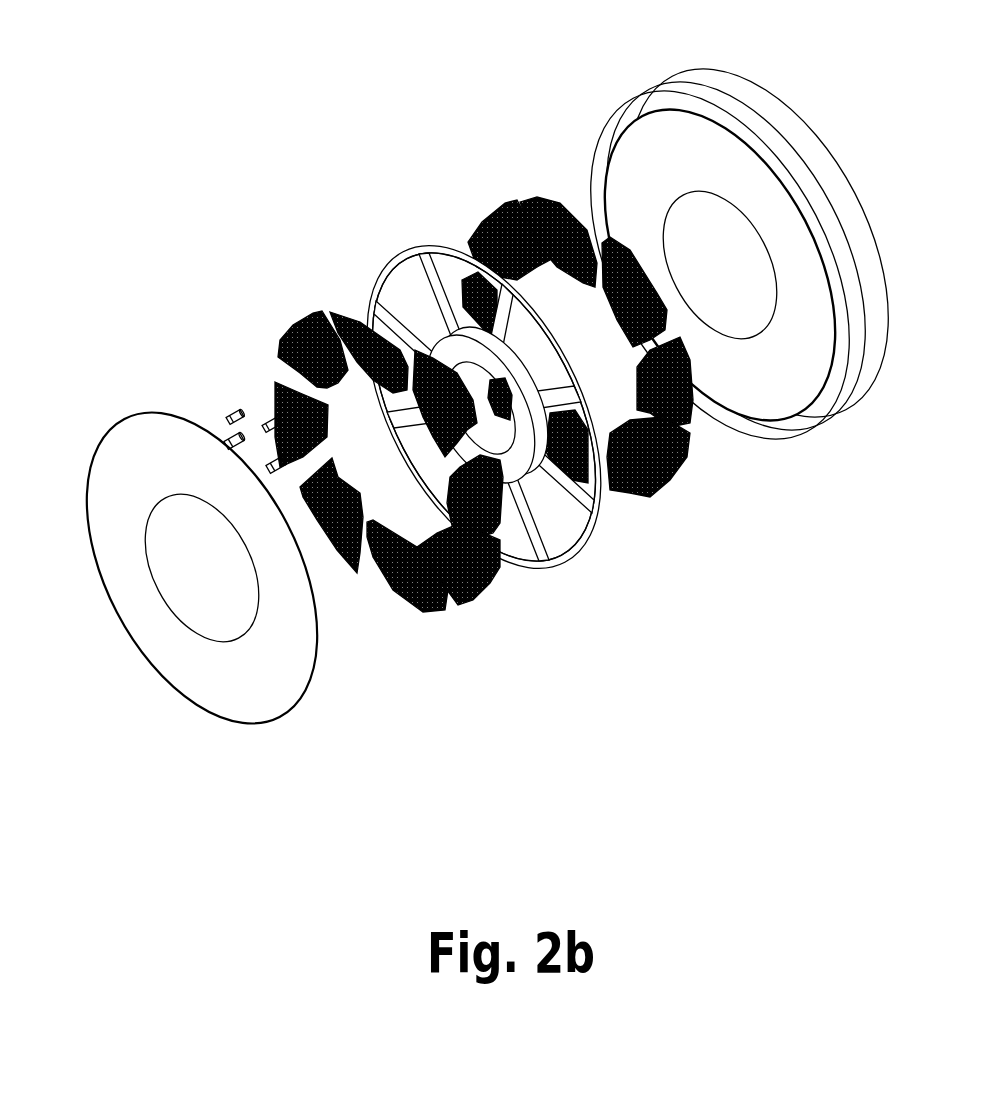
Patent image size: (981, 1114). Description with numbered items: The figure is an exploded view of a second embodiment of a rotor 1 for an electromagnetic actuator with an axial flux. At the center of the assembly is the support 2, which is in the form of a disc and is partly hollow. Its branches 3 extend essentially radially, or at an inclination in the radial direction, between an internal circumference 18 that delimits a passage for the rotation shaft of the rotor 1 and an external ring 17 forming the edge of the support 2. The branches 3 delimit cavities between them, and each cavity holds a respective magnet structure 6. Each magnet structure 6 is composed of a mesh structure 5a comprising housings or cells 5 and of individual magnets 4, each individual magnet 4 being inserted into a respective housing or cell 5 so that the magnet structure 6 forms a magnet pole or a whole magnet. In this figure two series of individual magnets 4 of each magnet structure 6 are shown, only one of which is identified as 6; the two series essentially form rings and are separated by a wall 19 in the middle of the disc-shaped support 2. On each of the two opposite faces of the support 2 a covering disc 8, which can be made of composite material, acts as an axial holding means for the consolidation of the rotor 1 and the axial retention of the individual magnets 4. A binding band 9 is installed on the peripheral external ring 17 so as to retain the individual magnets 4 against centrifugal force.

The rotor 1 is at (541, 427).
The support 2 is at (450, 247).
The branches 3 is at (433, 290).
The individual magnets 4 is at (236, 408).
The housings or cells 5 is at (290, 322).
The mesh structure 5a is at (367, 317).
The magnet structure 6 is at (423, 622).
The covering disc 8 is at (668, 138).
The binding band 9 is at (787, 107).
The external ring 17 is at (598, 500).
The internal circumference 18 is at (387, 280).
The wall 19 is at (557, 510).